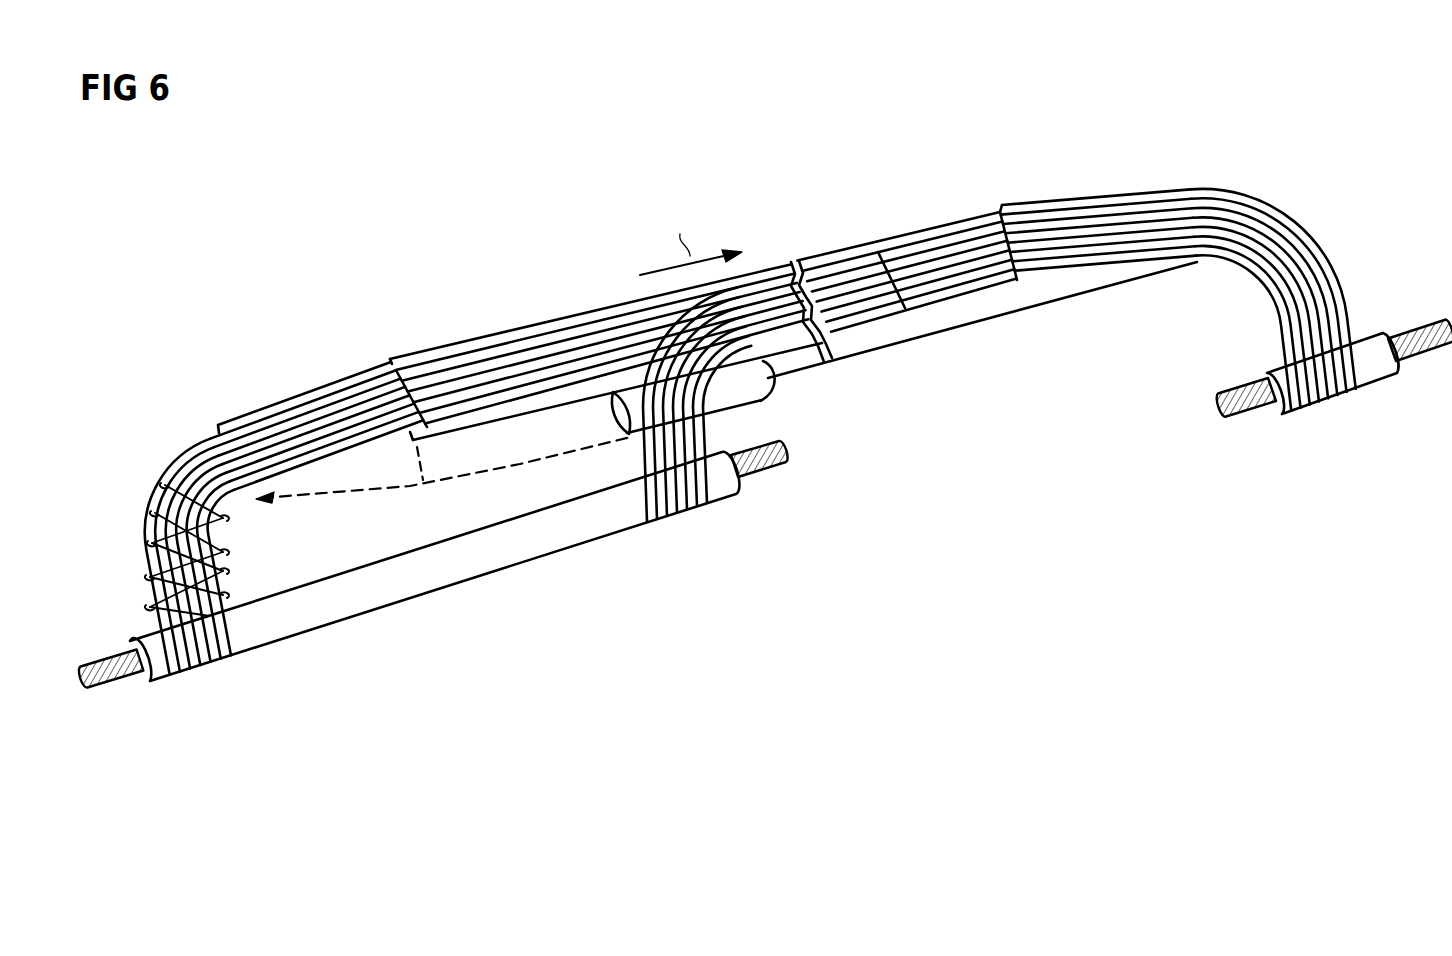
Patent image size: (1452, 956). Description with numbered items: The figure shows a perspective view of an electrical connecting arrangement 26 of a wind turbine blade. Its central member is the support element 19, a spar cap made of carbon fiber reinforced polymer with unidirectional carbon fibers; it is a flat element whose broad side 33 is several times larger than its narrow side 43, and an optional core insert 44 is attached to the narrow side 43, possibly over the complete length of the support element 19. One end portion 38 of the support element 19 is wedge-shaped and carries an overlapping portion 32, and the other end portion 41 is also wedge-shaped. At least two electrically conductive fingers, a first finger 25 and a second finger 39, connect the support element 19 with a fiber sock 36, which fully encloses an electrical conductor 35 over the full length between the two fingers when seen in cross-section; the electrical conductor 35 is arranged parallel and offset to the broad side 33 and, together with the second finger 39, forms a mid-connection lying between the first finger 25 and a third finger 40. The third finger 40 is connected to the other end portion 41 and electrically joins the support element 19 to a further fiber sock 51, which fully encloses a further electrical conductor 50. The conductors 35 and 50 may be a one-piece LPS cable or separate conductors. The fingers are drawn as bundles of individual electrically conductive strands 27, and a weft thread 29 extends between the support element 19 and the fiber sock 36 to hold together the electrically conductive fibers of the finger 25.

The support element 19 is at (550, 308).
The first finger 25 is at (236, 521).
The electrical connecting arrangement 26 is at (530, 188).
The conductor 27 is at (158, 557).
The weft thread 29 is at (148, 579).
The overlapping portion 32 is at (306, 401).
The broad side 33 is at (488, 341).
The electrical conductor 35 is at (125, 685).
The fiber sock 36 is at (437, 598).
The end portion 38 is at (400, 472).
The second finger 39 is at (635, 453).
The third finger 40 is at (1296, 230).
The other end portion 41 is at (1072, 288).
The narrow side 43 is at (474, 438).
The core insert 44 is at (767, 383).
The further electrical conductor 50 is at (1253, 410).
The further fiber sock 51 is at (1322, 407).